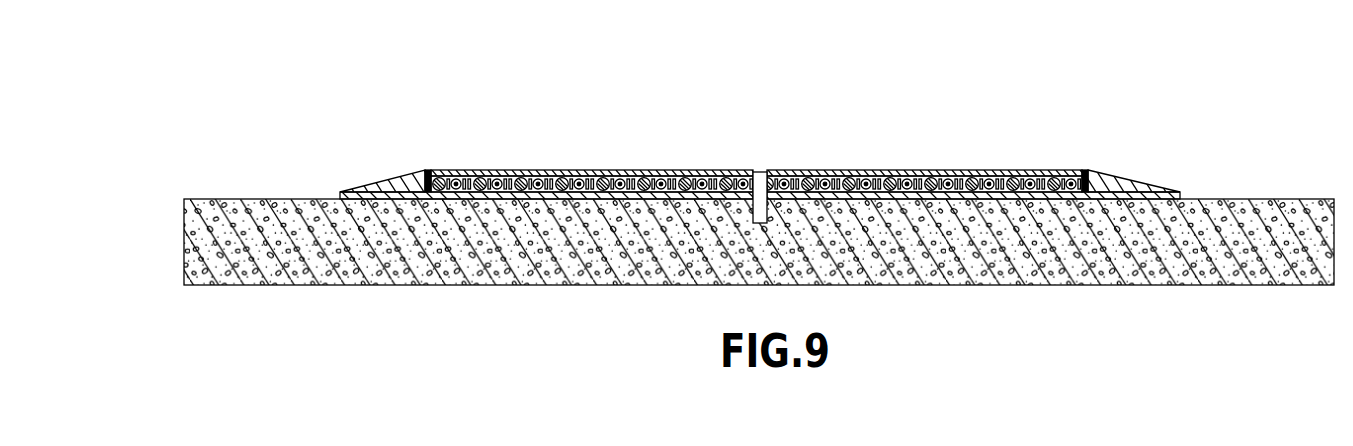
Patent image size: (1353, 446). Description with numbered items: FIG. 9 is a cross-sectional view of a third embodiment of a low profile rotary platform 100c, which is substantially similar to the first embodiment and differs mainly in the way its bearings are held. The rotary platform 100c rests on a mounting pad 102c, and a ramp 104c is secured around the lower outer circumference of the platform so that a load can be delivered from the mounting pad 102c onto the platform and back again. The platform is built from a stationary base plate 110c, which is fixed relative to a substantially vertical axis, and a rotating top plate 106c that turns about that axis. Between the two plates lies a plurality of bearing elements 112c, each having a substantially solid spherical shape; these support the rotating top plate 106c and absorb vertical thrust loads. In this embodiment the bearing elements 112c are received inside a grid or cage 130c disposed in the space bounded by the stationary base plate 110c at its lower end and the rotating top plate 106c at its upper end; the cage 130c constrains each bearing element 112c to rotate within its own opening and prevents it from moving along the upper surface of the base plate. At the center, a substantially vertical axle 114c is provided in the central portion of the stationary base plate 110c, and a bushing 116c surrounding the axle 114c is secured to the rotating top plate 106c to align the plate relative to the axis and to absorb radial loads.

The rotary platform 100c is at (741, 145).
The mounting pad 102c is at (200, 212).
The ramp 104c is at (376, 179).
The rotating top plate 106c is at (472, 171).
The stationary base plate 110c is at (368, 193).
The bearing elements 112c is at (503, 173).
The axle 114c is at (770, 171).
The bushing 116c is at (757, 172).
The cage 130c is at (704, 172).